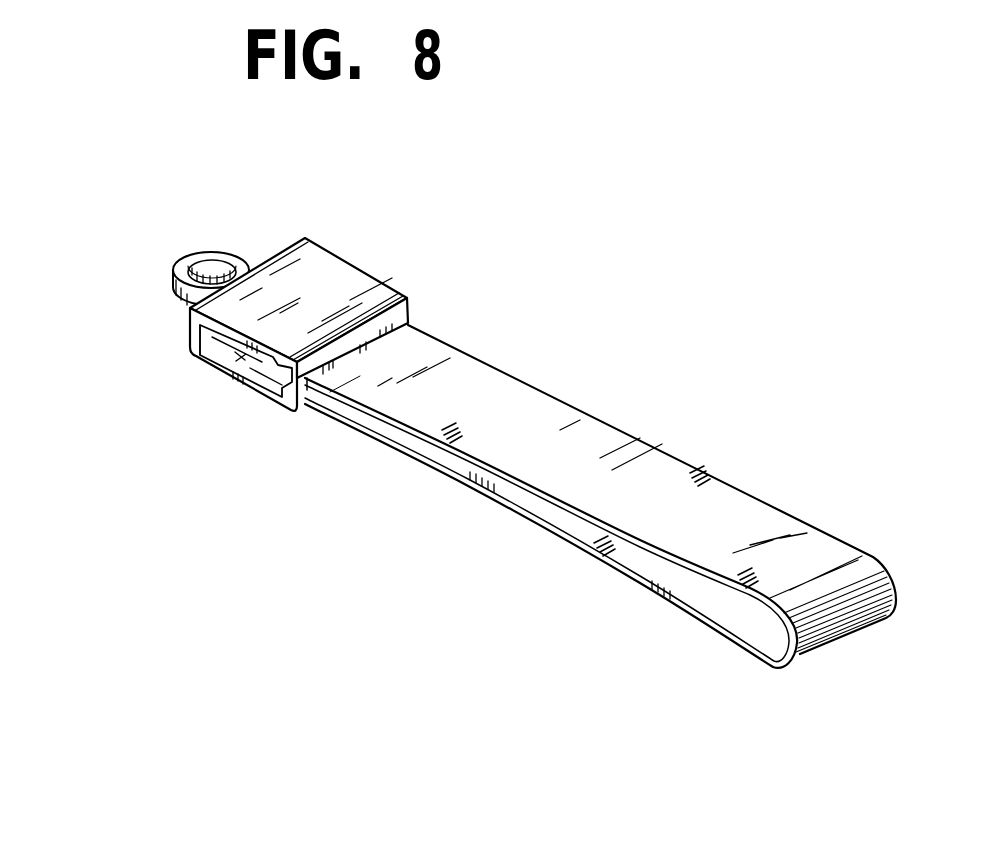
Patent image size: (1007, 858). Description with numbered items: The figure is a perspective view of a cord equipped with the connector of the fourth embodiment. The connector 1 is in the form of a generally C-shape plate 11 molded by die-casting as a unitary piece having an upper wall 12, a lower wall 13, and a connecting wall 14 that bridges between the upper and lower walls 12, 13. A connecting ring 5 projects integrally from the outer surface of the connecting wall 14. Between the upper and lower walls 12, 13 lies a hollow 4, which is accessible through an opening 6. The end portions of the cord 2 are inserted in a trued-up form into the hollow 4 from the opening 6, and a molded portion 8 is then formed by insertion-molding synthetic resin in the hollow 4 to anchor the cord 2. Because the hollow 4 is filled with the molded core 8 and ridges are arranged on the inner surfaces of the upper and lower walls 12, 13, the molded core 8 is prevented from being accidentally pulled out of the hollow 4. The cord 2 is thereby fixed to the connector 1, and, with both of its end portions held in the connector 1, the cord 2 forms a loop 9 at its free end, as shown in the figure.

The connector 1 is at (308, 230).
The cord 2 is at (537, 408).
The hollow 4 is at (210, 367).
The connecting ring 5 is at (207, 252).
The opening 6 is at (363, 372).
The molded portion 8 is at (258, 372).
The loop 9 is at (828, 608).
The C-shape plate 11 is at (358, 288).
The upper wall 12 is at (188, 308).
The lower wall 13 is at (227, 375).
The connecting wall 14 is at (187, 343).